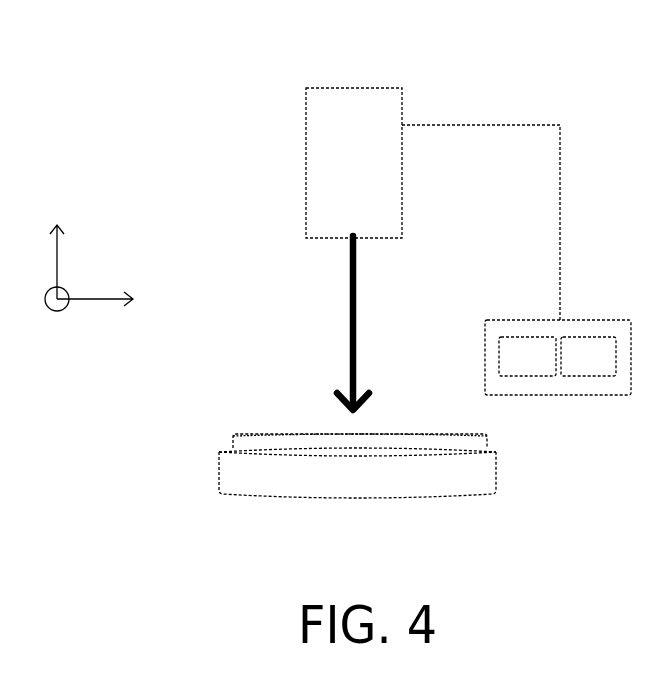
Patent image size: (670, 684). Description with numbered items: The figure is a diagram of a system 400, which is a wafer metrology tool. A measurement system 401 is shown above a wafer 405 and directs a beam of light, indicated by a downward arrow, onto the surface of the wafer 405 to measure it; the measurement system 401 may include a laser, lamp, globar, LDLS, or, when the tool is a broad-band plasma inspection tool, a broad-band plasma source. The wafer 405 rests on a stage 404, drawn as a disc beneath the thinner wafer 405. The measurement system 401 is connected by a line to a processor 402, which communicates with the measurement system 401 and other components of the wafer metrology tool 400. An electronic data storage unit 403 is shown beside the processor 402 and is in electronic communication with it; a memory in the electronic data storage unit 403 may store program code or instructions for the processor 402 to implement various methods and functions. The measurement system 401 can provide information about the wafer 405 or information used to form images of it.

The system 400 is at (192, 104).
The measurement system 401 is at (372, 174).
The processor 402 is at (546, 367).
The electronic data storage unit 403 is at (608, 367).
The stage 404 is at (262, 498).
The wafer 405 is at (290, 433).